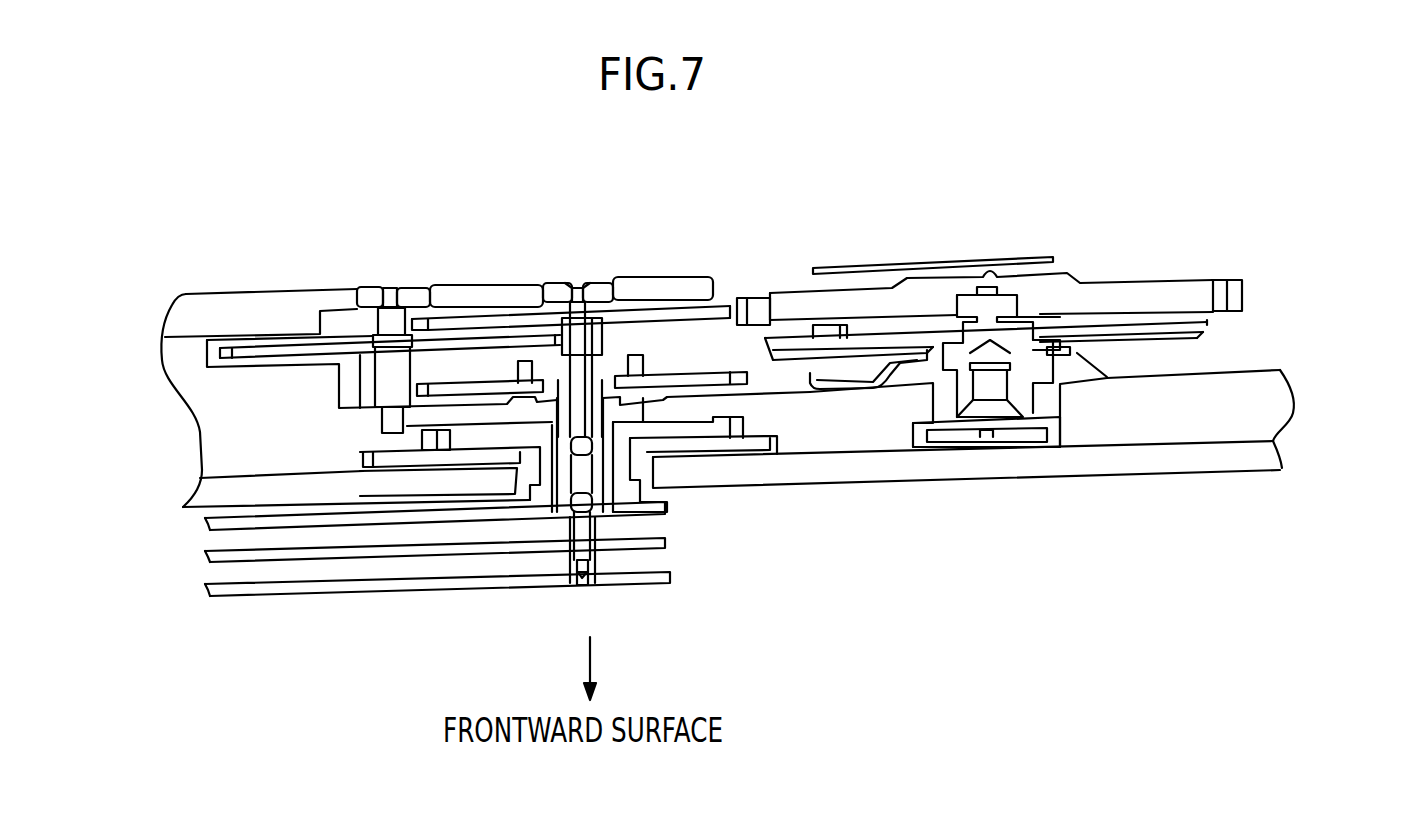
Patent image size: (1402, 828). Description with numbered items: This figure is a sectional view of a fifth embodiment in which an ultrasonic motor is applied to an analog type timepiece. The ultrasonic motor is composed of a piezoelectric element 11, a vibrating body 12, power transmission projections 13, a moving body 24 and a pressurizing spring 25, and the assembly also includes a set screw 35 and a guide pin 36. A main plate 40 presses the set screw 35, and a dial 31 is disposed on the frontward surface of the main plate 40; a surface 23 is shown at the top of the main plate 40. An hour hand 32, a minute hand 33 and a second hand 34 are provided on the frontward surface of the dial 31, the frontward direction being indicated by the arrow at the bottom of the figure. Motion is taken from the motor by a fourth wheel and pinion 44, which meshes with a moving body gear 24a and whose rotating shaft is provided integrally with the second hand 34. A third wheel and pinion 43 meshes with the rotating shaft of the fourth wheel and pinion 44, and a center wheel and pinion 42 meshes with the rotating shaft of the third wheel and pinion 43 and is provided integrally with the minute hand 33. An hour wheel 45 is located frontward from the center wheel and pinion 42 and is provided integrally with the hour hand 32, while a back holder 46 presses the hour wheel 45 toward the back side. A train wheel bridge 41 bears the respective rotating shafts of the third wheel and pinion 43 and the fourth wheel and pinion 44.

The piezoelectric element 11 is at (1200, 340).
The vibrating body 12 is at (1207, 335).
The power transmission projections 13 is at (1207, 322).
The surface of base plate 23 is at (1258, 380).
The moving body 24 is at (1133, 297).
The moving body gear 24a is at (1233, 278).
The pressurizing spring 25 is at (1040, 258).
The dial 31 is at (1238, 455).
The hour hand 32 is at (223, 530).
The minute hand 33 is at (223, 565).
The second hand 34 is at (223, 600).
The set screw 35 is at (993, 395).
The guide pin 36 is at (930, 383).
The main plate 40 is at (1272, 405).
The train wheel bridge 41 is at (222, 312).
The center wheel & pinion 42 is at (470, 380).
The third wheel & pinion 43 is at (300, 345).
The fourth wheel & pinion 44 is at (723, 300).
The hour wheel 45 is at (700, 432).
The back holder 46 is at (685, 448).